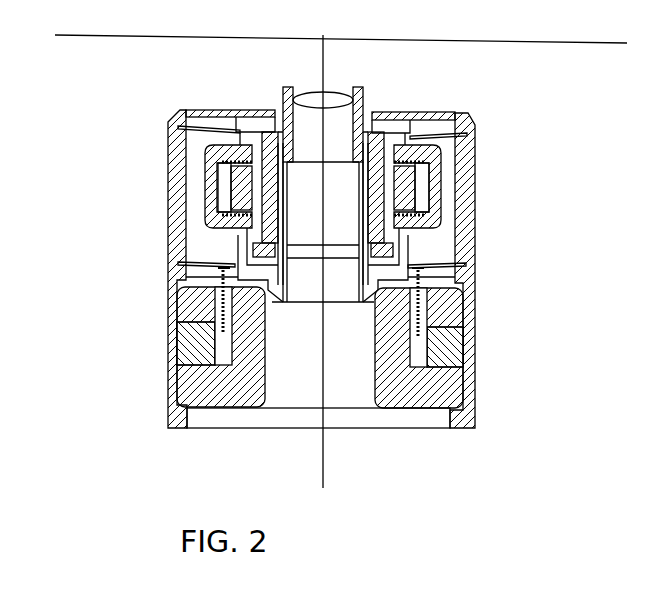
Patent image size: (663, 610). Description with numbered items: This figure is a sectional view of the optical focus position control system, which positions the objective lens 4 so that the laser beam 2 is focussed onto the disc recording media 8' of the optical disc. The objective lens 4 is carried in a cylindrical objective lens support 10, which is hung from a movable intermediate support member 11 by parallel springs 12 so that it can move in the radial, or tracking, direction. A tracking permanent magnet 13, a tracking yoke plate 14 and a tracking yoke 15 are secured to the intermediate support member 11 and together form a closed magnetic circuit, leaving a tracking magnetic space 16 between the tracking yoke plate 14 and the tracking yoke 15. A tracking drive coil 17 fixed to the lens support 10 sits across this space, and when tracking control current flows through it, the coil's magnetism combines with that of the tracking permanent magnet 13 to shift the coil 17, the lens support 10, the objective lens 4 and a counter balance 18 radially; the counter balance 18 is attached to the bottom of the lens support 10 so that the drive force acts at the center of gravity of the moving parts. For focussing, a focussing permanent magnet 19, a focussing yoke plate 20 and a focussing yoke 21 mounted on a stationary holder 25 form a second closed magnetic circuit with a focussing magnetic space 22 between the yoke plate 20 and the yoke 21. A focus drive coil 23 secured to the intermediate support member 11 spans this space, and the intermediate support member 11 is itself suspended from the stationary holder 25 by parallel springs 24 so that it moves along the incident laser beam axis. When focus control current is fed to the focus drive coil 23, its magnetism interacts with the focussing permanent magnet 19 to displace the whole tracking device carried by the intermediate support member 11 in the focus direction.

The disc recording media 8' is at (341, 23).
The laser beam 2 is at (324, 458).
The objective lens 4 is at (352, 104).
The cylindrical objective lens support 10 is at (335, 160).
The movable intermediate support member 11 is at (420, 238).
The parallel springs 12 is at (438, 130).
The tracking permanent magnet 13 is at (405, 187).
The tracking yoke plate 14 is at (412, 199).
The tracking yoke 15 is at (430, 214).
The tracking magnetic space 16 is at (438, 157).
The tracking drive coil 17 is at (428, 168).
The counter balance 18 is at (413, 255).
The focussing permanent magnet 19 is at (428, 352).
The focussing yoke plate 20 is at (430, 316).
The focussing yoke 21 is at (438, 390).
The focussing magnetic space 22 is at (430, 292).
The focus drive coil 23 is at (445, 337).
The parallel springs 24 is at (455, 115).
The stationary holder 25 is at (462, 420).